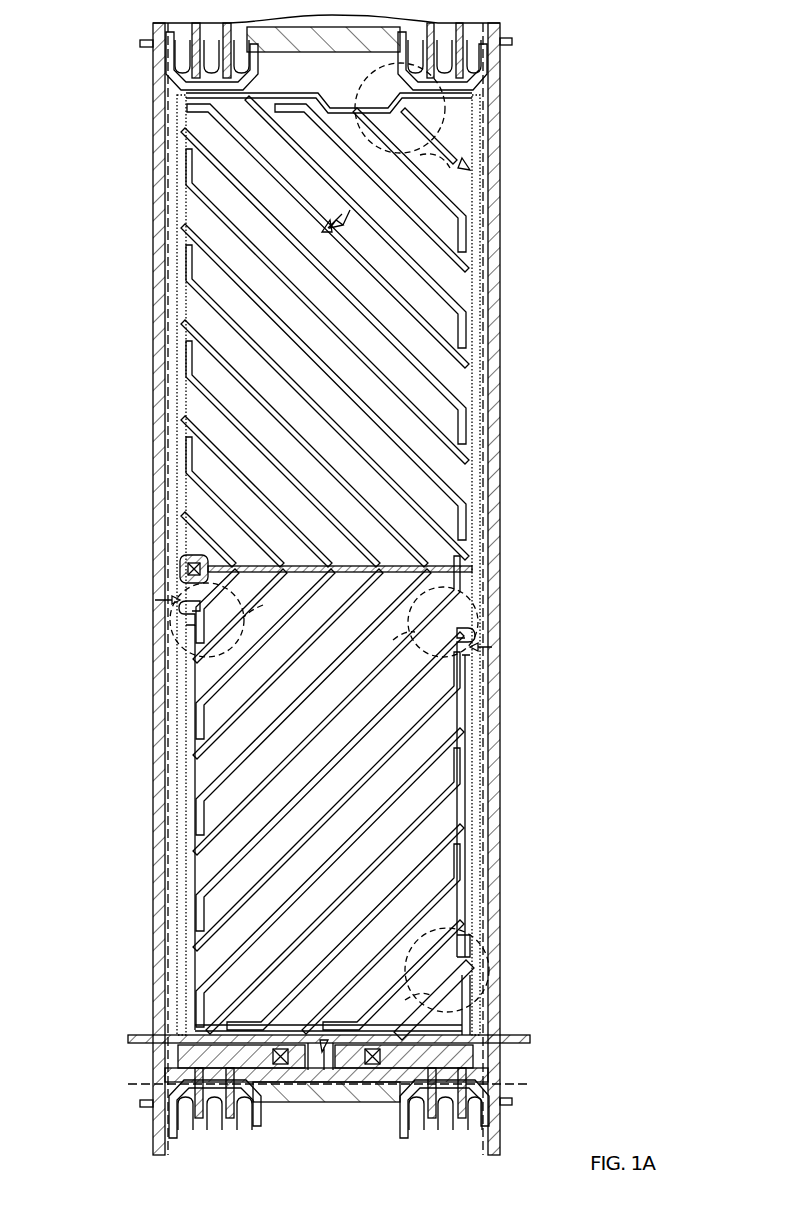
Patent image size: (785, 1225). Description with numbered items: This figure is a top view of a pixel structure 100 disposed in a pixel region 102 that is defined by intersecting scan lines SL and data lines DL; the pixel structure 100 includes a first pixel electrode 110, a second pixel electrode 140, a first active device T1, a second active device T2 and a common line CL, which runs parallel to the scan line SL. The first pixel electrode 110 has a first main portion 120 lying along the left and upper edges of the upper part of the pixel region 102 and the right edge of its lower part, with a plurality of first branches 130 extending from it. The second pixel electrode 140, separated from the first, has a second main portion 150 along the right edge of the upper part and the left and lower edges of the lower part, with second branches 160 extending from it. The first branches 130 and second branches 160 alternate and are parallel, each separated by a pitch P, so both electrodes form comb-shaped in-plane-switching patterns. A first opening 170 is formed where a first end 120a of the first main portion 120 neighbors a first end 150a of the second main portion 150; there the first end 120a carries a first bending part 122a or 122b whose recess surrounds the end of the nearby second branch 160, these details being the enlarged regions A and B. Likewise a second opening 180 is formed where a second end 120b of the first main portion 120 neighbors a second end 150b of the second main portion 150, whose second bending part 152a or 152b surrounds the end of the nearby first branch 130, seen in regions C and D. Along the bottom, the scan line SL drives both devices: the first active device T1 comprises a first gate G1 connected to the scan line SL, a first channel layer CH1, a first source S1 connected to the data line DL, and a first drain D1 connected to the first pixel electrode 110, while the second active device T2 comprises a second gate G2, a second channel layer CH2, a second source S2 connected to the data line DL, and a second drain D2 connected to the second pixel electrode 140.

The pixel structure 100 is at (347, 592).
The pixel region 102 is at (503, 495).
The first pixel electrode 110 is at (300, 564).
The first main portion 120 is at (183, 178).
The first end of the first main portion 120a is at (176, 57).
The second end of the first main portion 120b is at (180, 566).
The first bending part 122a is at (430, 95).
The first bending part 122b is at (470, 955).
The first branches 130 is at (200, 272).
The second pixel electrode 140 is at (332, 565).
The second main portion 150 is at (440, 242).
The first end of the second main portion 150a is at (470, 160).
The second end of the second main portion 150b is at (190, 650).
The second bending part 152a is at (475, 632).
The second bending part 152b is at (182, 615).
The second branches 160 is at (480, 277).
The first opening 170 is at (470, 170).
The second opening 180 is at (156, 600).
The region A is at (437, 175).
The region B is at (407, 1008).
The region C is at (425, 622).
The region D is at (225, 620).
The pitch P is at (338, 228).
The common line CL is at (500, 1030).
The data line DL is at (480, 985).
The scan line SL is at (365, 1090).
The first active device T1 is at (493, 994).
The second active device T2 is at (346, 1004).
The first drain D1 is at (480, 1055).
The first source S1 is at (480, 1090).
The first channel layer CH1 is at (470, 1122).
The first gate G1 is at (572, 1065).
The second drain D2 is at (180, 1052).
The second source S2 is at (180, 1092).
The second channel layer CH2 is at (190, 1110).
The second gate G2 is at (80, 1050).